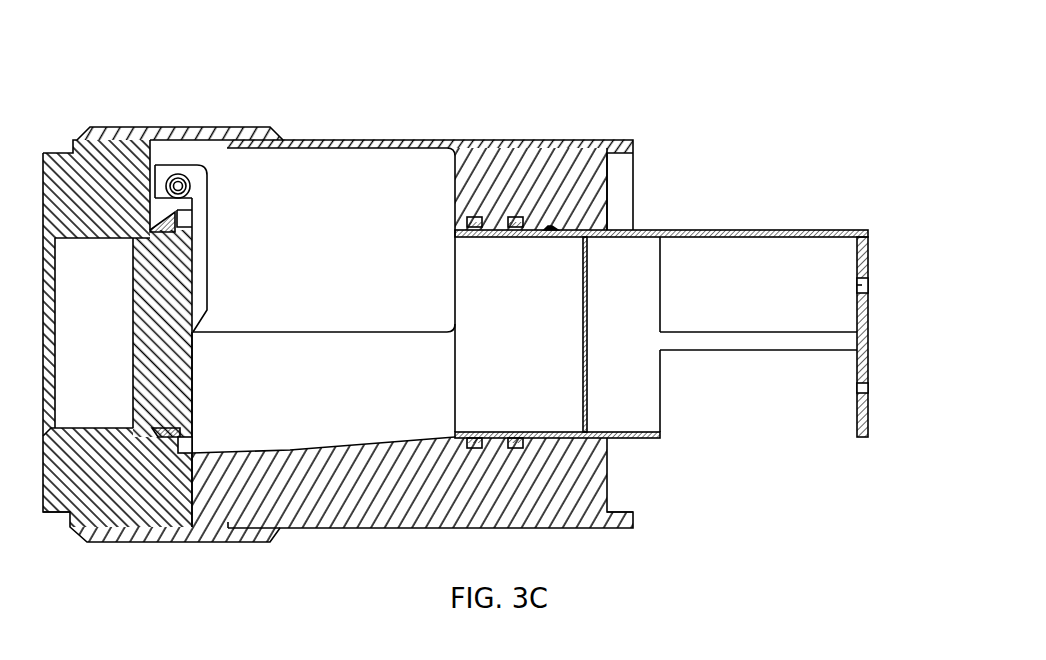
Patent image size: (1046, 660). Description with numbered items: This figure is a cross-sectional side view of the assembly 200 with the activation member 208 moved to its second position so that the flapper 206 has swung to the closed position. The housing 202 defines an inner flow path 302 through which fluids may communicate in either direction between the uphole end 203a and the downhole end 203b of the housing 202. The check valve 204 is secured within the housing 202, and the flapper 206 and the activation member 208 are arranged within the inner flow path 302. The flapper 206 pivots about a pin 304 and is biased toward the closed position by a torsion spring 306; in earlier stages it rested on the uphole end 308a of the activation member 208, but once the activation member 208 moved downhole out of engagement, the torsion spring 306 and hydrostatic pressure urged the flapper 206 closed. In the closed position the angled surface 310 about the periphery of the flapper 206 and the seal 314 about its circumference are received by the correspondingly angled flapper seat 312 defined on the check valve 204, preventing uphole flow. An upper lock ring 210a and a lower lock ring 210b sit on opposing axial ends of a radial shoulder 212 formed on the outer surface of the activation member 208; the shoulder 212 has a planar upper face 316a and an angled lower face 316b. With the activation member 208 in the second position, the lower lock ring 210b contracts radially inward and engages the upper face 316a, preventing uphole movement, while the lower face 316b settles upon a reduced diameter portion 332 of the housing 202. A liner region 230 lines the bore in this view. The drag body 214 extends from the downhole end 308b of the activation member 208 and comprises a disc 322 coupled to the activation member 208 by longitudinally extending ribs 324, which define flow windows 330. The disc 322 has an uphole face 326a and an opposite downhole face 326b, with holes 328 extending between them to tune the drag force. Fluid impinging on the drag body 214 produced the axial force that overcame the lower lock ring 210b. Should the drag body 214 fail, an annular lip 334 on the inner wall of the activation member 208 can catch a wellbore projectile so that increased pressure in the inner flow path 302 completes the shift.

The assembly 200 is at (828, 85).
The housing 202 is at (560, 140).
The uphole end 203a is at (88, 118).
The downhole end 203b is at (633, 140).
The check valve 204 is at (103, 248).
The flapper 206 is at (185, 292).
The activation member 208 is at (455, 400).
The upper lock ring 210a is at (470, 236).
The lower lock ring 210b is at (515, 237).
The radial shoulder 212 is at (543, 228).
The drag body 214 is at (792, 480).
The liner plate 230 is at (497, 236).
The inner flow path 302 is at (315, 363).
The pin 304 is at (178, 173).
The torsion spring 306 is at (192, 188).
The uphole end of activation member 308a is at (455, 231).
The downhole end of activation member 308b is at (662, 434).
The angled surface 310 is at (140, 433).
The flapper seat 312 is at (152, 428).
The seal 314 is at (190, 455).
The upper face 316a is at (497, 430).
The lower face 316b is at (563, 432).
The disc 322 is at (858, 230).
The ribs 324 is at (753, 332).
The uphole face 326a is at (857, 362).
The downhole face 326b is at (870, 258).
The holes 328 is at (857, 283).
The flow windows 330 is at (694, 374).
The reduced diameter portion 332 is at (550, 237).
The annular lip 334 is at (588, 296).